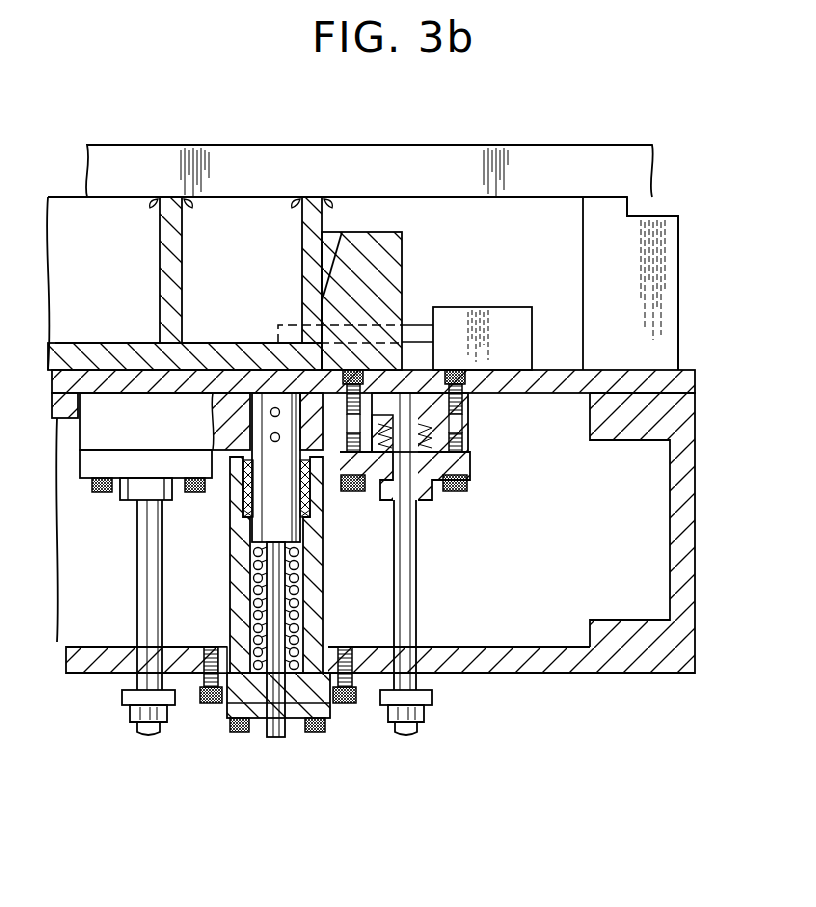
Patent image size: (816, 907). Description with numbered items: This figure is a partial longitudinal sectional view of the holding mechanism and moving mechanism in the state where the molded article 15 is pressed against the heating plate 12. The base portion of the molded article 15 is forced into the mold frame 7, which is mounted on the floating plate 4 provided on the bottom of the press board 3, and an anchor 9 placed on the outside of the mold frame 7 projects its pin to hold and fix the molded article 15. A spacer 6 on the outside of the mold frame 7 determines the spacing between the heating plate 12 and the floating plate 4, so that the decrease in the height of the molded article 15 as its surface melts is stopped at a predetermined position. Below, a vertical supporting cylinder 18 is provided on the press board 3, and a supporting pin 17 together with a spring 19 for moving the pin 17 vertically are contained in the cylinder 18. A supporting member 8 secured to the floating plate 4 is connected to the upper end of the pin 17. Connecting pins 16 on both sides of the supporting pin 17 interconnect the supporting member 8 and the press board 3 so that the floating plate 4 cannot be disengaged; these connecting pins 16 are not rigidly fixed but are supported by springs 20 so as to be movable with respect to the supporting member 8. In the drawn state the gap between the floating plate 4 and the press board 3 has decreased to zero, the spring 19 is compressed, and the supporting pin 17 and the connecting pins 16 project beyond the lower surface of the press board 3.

The press board 3 is at (692, 430).
The floating plate 4 is at (688, 371).
The spacer 6 is at (678, 236).
The mold frame 7 is at (402, 244).
The supporting member 8 is at (326, 470).
The anchor 9 is at (498, 312).
The heating plate 12 is at (537, 146).
The molded article 15 is at (249, 210).
The connecting pin 16 is at (158, 600).
The supporting pin 17 is at (278, 737).
The supporting cylinder 18 is at (315, 572).
The spring 19 is at (300, 612).
The spring 20 is at (432, 432).